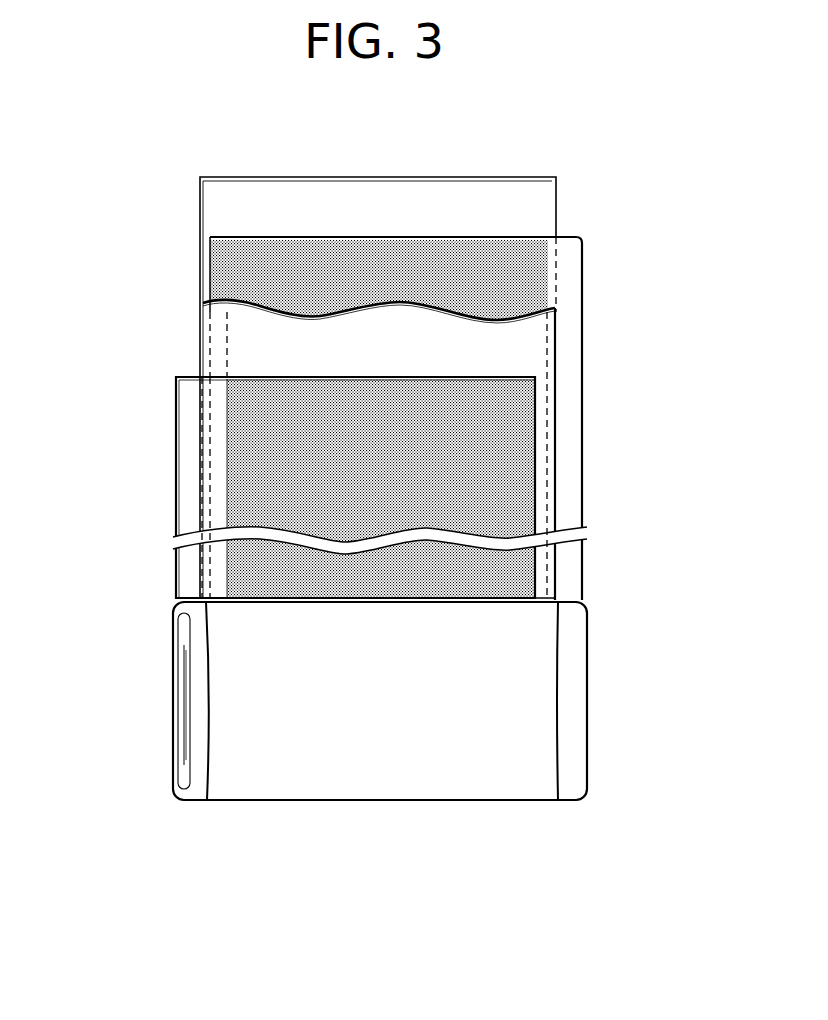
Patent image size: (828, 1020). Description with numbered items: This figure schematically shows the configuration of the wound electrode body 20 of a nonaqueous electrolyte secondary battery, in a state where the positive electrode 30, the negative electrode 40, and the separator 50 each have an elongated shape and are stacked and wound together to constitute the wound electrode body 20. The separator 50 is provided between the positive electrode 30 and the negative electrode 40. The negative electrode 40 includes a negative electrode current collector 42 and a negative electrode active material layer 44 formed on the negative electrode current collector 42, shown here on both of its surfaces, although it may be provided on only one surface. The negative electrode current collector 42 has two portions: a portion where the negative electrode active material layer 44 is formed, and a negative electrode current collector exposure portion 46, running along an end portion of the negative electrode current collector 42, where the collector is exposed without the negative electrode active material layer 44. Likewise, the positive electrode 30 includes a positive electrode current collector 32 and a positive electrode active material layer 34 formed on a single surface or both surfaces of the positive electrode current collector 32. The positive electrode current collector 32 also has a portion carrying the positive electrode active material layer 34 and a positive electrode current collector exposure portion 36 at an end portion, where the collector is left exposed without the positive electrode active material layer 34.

The wound electrode body 20 is at (445, 778).
The positive electrode 30 is at (300, 487).
The positive electrode current collector 32 is at (285, 487).
The positive electrode active material layer 34 is at (238, 495).
The positive electrode current collector exposure portion 36 is at (285, 487).
The negative electrode 40 is at (445, 418).
The negative electrode current collector 42 is at (462, 418).
The negative electrode active material layer 44 is at (522, 263).
The negative electrode current collector exposure portion 46 is at (462, 418).
The separator 50 is at (222, 201).